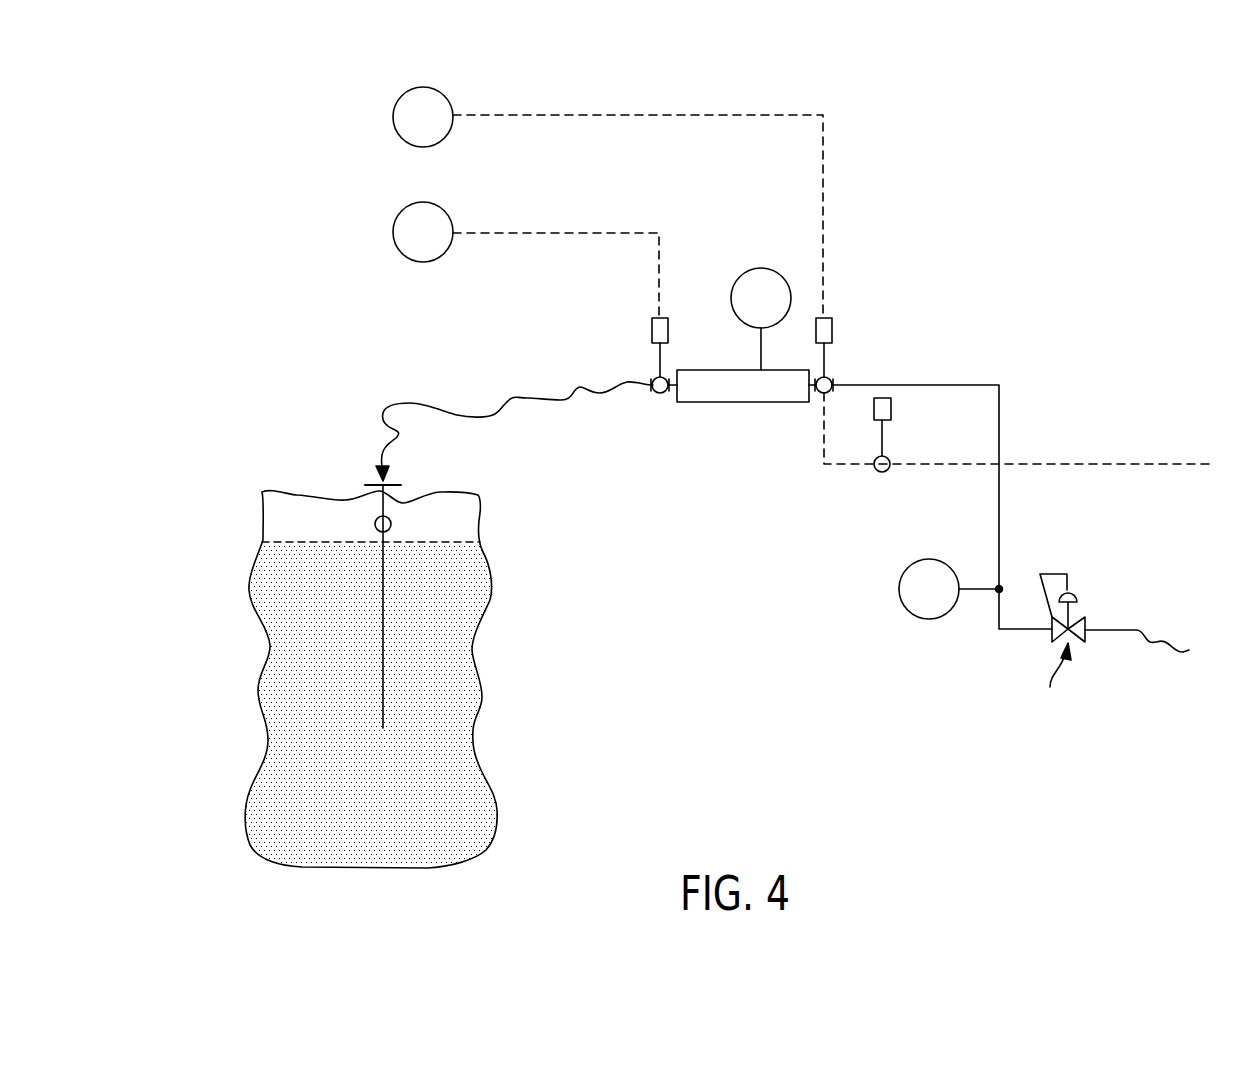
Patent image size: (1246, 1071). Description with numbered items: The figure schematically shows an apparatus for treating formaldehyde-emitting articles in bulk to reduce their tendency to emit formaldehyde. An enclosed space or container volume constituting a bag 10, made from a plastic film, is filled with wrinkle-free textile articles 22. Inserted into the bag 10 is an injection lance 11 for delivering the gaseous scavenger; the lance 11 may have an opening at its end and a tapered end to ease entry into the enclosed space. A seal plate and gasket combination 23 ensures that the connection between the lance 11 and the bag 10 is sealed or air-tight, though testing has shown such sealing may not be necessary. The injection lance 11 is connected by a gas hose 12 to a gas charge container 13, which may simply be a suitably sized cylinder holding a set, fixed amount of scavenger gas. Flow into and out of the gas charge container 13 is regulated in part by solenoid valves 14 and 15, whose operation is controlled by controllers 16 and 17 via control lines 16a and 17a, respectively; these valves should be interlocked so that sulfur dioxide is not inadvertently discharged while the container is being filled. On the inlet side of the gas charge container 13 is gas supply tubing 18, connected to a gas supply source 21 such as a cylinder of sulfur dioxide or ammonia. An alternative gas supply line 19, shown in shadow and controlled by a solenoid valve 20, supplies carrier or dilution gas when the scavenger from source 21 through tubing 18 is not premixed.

The bag 10 is at (265, 667).
The injection lance 11 is at (383, 588).
The gas hose 12 is at (513, 395).
The gas charge container 13 is at (727, 403).
The solenoid valve 14 is at (831, 380).
The solenoid valve 15 is at (653, 378).
The controller 16 is at (420, 86).
The control line 16a is at (633, 112).
The controller 17 is at (399, 214).
The control line 17a is at (613, 232).
The gas supply tubing 18 is at (947, 383).
The alternative gas supply line 19 is at (1068, 462).
The solenoid valve 20 is at (888, 458).
The gas supply source 21 is at (1148, 644).
The wrinkle-free textile articles 22 is at (370, 781).
The seal plate and gasket combination 23 is at (397, 480).